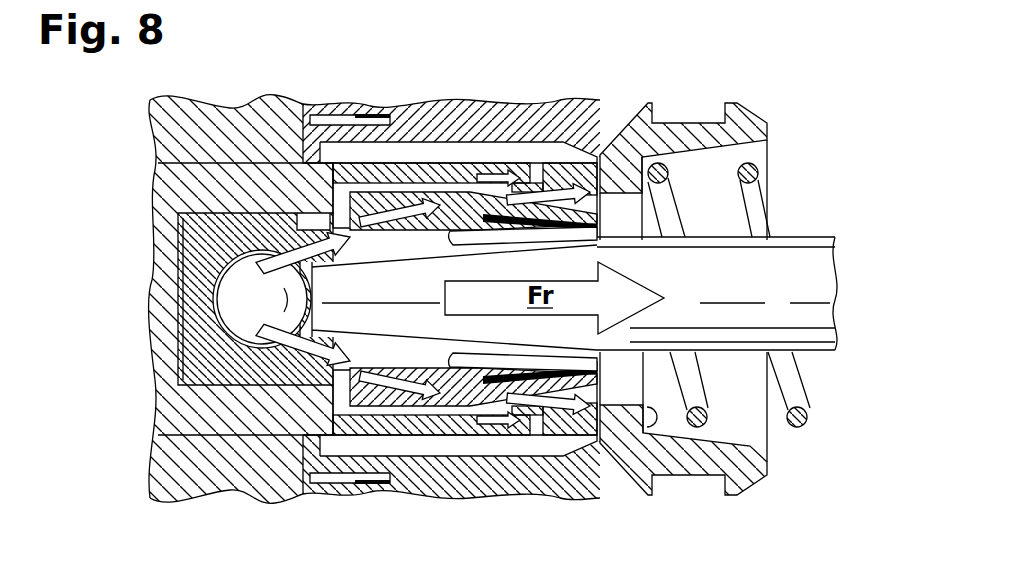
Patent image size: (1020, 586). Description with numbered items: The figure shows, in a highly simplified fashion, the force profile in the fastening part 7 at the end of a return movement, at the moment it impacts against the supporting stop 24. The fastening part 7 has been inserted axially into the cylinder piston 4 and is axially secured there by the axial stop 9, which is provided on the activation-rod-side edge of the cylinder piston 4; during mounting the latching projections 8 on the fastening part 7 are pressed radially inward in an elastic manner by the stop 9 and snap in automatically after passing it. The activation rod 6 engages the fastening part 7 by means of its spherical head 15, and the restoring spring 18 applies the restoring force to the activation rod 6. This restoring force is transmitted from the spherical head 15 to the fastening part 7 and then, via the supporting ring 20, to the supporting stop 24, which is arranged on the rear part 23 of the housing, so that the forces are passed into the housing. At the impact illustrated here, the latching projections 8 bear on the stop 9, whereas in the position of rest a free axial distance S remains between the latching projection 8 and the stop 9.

The cylinder piston 4 is at (160, 318).
The free axial distance S is at (178, 252).
The spherical head 15 is at (250, 310).
The activation rod 6 is at (797, 270).
The fastening part 7 is at (455, 393).
The latching projections 8 is at (500, 407).
The axial stop 9 is at (520, 413).
The supporting ring 20 is at (575, 425).
The rear part 23 is at (484, 118).
The supporting stop 24 is at (617, 180).
The restoring spring 18 is at (787, 382).